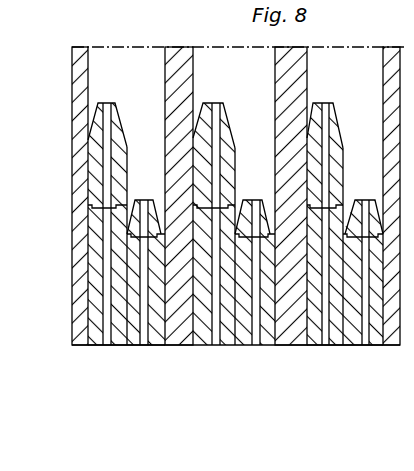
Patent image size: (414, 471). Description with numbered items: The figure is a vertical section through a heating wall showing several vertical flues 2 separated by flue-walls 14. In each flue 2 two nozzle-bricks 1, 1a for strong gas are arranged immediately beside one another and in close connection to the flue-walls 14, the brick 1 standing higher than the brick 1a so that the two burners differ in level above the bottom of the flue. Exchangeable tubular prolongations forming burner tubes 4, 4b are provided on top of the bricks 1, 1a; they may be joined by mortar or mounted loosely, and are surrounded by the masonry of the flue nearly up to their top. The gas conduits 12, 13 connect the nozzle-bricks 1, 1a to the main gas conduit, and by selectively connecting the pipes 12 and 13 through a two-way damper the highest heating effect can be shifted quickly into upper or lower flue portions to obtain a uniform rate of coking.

The nozzle-brick 1 is at (93, 278).
The nozzle-brick 1a is at (130, 300).
The vertical flue 2 is at (238, 64).
The burner tube 4 is at (100, 137).
The burner tube 4b is at (137, 224).
The gas conduit 12 is at (107, 343).
The gas conduit 13 is at (145, 343).
The flue-wall 14 is at (178, 72).